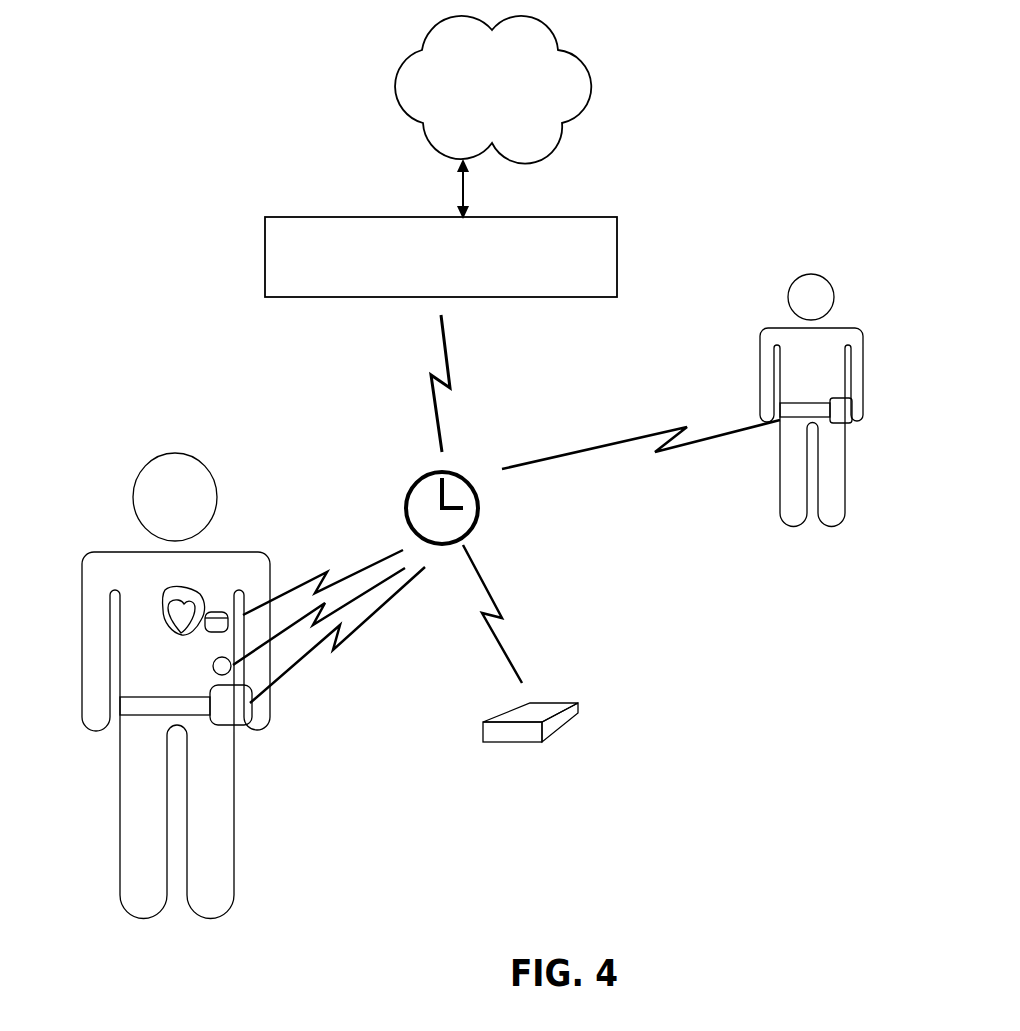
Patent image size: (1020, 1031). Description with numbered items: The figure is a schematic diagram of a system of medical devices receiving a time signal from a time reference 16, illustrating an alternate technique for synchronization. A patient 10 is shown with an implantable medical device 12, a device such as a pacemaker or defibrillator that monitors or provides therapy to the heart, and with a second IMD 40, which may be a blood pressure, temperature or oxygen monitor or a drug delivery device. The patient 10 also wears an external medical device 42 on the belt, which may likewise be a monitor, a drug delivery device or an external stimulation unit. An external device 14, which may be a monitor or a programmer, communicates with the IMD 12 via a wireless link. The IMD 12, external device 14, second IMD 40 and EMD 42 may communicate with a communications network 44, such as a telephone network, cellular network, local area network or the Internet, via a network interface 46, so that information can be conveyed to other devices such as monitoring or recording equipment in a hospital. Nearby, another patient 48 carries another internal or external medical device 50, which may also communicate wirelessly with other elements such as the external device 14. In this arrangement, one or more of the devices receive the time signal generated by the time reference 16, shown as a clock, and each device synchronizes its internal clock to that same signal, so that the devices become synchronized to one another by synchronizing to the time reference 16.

The patient 10 is at (94, 604).
The implantable medical device 12 is at (206, 632).
The external device 14 is at (578, 708).
The time reference 16 is at (480, 508).
The second IMD 40 is at (213, 670).
The external medical device 42 is at (240, 713).
The communications network 44 is at (590, 80).
The network interface 46 is at (617, 252).
The other patient 48 is at (762, 342).
The medical device 50 is at (852, 400).